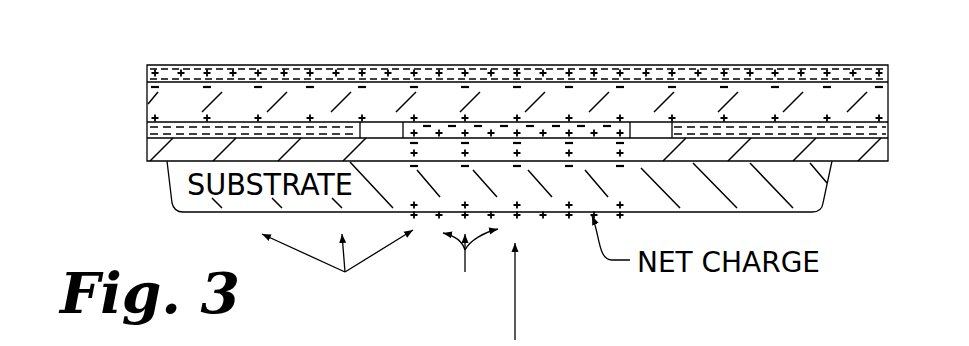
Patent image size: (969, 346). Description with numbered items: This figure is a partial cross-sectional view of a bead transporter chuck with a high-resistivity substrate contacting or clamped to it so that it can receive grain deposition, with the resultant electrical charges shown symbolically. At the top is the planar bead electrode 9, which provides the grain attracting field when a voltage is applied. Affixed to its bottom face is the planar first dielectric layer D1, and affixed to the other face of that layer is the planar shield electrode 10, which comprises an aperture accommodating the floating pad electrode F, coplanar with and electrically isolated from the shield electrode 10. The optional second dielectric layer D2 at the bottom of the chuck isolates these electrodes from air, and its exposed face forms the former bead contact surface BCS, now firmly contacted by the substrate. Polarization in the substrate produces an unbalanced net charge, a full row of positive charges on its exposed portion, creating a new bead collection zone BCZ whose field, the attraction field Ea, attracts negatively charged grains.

The bead electrode 9 is at (276, 66).
The first dielectric layer D1 is at (150, 98).
The second dielectric layer D2 is at (152, 146).
The floating pad electrode F is at (475, 131).
The shield electrode 10 is at (860, 141).
The bead contact surface BCS is at (337, 271).
The bead collection zone BCZ is at (467, 271).
The grain attraction field Ea is at (514, 290).